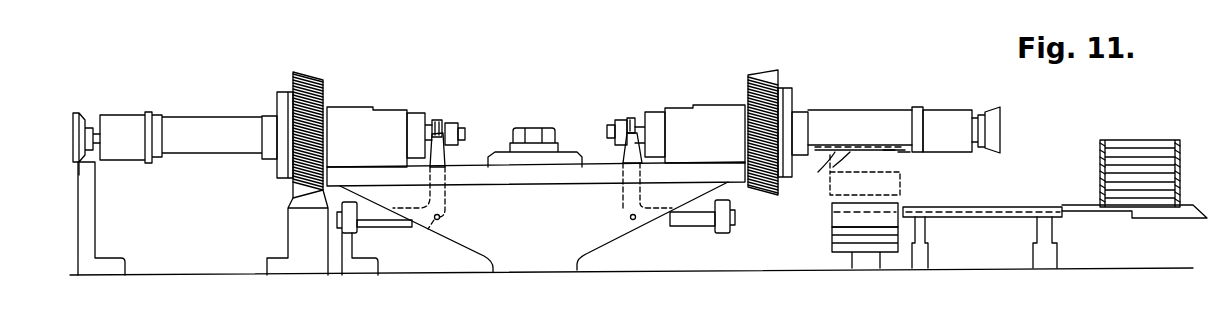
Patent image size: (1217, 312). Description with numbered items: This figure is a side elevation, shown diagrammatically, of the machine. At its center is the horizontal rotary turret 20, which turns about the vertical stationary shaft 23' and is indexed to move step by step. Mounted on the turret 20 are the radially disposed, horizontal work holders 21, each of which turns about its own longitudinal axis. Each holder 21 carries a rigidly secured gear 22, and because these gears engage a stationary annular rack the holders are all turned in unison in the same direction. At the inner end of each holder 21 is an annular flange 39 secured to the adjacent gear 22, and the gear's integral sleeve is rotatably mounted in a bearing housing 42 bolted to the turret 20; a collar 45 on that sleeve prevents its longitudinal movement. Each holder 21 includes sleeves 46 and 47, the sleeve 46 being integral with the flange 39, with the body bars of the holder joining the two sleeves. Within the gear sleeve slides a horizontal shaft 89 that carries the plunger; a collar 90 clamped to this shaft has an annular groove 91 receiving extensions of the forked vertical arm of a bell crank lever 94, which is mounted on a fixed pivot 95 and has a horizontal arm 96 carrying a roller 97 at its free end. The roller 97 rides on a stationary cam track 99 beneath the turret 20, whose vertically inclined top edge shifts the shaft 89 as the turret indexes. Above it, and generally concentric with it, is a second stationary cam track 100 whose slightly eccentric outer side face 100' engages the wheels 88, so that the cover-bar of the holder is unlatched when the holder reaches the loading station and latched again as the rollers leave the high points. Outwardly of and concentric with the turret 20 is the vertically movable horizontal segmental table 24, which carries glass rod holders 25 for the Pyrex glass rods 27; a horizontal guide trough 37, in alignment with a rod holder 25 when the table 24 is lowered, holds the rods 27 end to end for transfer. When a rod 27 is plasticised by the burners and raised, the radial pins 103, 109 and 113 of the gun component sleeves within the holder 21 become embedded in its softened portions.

The horizontal rotary turret 20 is at (557, 173).
The work holder 21 is at (203, 110).
The gear 22 is at (307, 73).
The vertical stationary shaft 23' is at (535, 135).
The horizontal segmental table 24 is at (832, 248).
The glass rod holder 25 is at (832, 219).
The glass rod 27 is at (1090, 180).
The horizontal guide trough 37 is at (993, 218).
The annular flange 39 is at (790, 90).
The bearing housing 42 is at (360, 108).
The collar 45 is at (418, 113).
The sleeve 46 is at (799, 112).
The sleeve 47 is at (914, 108).
The wheel 88 is at (83, 113).
The horizontal shaft 89 is at (463, 128).
The collar 90 is at (448, 123).
The annular groove 91 is at (437, 120).
The bell crank lever 94 is at (446, 153).
The fixed pivot 95 is at (443, 217).
The horizontal arm 96 is at (407, 224).
The roller 97 is at (360, 221).
The stationary cam track 99 is at (350, 258).
The stationary cam track 100 is at (118, 218).
The outer side face 100' is at (119, 178).
The radial pins 103 is at (898, 152).
The radial metallic pins 109 is at (883, 150).
The circumferential radial pins 113 is at (854, 173).